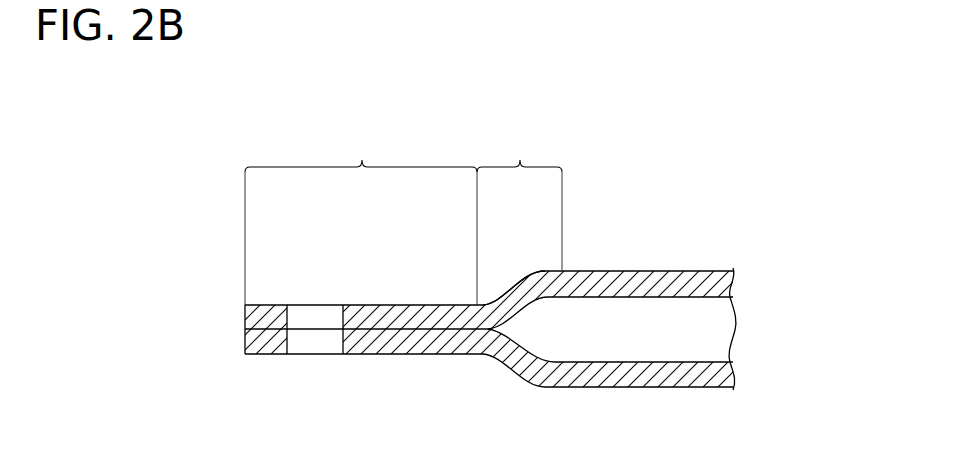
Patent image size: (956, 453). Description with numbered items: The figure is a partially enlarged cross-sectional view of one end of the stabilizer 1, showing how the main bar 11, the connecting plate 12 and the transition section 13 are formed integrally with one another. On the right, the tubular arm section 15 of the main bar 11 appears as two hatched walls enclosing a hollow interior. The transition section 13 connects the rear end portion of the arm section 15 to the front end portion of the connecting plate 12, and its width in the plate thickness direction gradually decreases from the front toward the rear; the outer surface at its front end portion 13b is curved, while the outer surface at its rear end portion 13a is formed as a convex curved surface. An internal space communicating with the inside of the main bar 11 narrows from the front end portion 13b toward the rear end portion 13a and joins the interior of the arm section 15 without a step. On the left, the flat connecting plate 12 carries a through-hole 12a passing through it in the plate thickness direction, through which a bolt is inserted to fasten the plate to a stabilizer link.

The stabilizer 1 is at (765, 234).
The main bar 11 is at (530, 320).
The connecting plate 12 is at (361, 243).
The through-hole 12a is at (302, 318).
The transition section 13 is at (519, 201).
The rear end portion of the transition section 13a is at (495, 298).
The front end portion of the transition section 13b is at (527, 268).
The arm section 15 is at (665, 271).